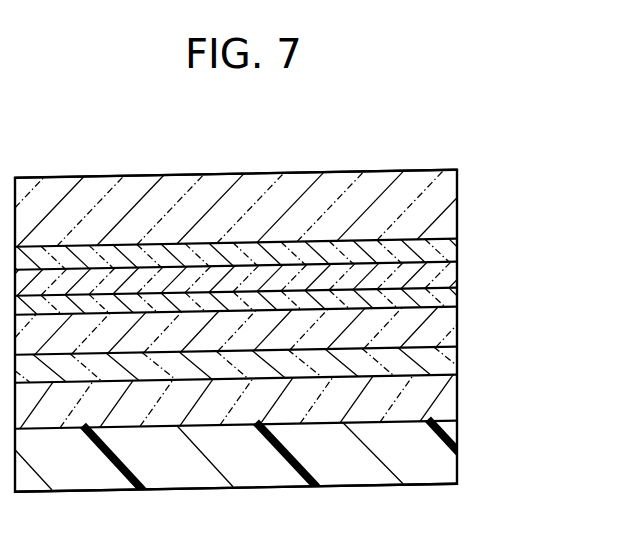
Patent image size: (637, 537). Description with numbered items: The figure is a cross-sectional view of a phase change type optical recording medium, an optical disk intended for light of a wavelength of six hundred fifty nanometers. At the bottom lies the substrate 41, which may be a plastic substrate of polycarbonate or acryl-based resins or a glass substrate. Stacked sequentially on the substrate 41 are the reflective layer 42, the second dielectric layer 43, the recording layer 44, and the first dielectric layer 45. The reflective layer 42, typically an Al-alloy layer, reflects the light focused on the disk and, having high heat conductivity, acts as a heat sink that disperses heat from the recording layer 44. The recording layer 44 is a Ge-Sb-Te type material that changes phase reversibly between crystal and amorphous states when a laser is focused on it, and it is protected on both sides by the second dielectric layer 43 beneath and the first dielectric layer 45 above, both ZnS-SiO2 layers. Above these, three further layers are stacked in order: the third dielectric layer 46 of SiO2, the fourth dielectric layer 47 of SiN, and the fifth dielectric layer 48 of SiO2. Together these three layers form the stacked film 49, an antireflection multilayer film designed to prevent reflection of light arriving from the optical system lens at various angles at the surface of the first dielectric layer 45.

The substrate 41 is at (443, 462).
The reflective layer 42 is at (452, 402).
The second dielectric layer 43 is at (450, 370).
The recording layer 44 is at (448, 322).
The first dielectric layer 45 is at (448, 297).
The third dielectric layer 46 is at (448, 277).
The fourth dielectric layer 47 is at (448, 250).
The fifth dielectric layer 48 is at (448, 219).
The stacked film 49 is at (557, 200).